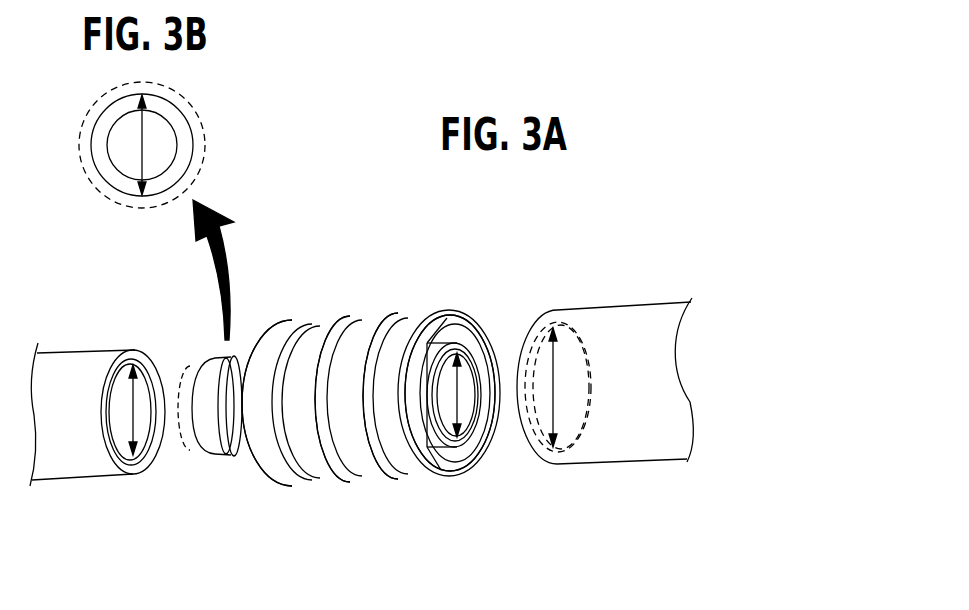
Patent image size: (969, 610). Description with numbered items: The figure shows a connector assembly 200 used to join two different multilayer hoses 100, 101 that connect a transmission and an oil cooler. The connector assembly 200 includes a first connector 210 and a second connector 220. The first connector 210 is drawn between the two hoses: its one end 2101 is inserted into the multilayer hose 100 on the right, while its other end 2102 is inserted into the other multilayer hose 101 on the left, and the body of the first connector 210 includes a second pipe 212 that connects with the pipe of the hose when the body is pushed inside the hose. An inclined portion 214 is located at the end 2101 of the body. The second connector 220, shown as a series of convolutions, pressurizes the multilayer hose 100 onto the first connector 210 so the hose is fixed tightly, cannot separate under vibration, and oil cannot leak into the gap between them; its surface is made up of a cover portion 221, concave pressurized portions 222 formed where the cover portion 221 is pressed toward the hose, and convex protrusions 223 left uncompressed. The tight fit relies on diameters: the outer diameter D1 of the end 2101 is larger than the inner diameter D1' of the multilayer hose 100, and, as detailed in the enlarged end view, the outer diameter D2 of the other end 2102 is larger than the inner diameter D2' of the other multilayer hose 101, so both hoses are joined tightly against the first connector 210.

In FIG. 3A, the multilayer hose 100 is at (632, 489).
In FIG. 3A, the multilayer hose 101 is at (86, 509).
In FIG. 3A, the connector assembly 200 is at (510, 210).
In FIG. 3A, the first connector 210 is at (477, 459).
In FIG. 3A, the one end 2101 is at (492, 419).
In FIG. 3A, the other end 2102 is at (221, 467).
In FIG. 3A, the second pipe 212 is at (489, 355).
In FIG. 3A, the inclined portion 214 is at (458, 331).
In FIG. 3A, the second connector 220 is at (312, 515).
In FIG. 3A, the cover portion 221 is at (427, 322).
In FIG. 3A, the pressurized portion 222 is at (377, 325).
In FIG. 3A, the protrusion 223 is at (330, 322).
In FIG. 3A, the outer diameter D1 is at (418, 441).
In FIG. 3A, the inner diameter D1' is at (588, 351).
In FIG. 3B, the outer diameter D2 is at (93, 145).
In FIG. 3A, the inner diameter D2' is at (163, 385).